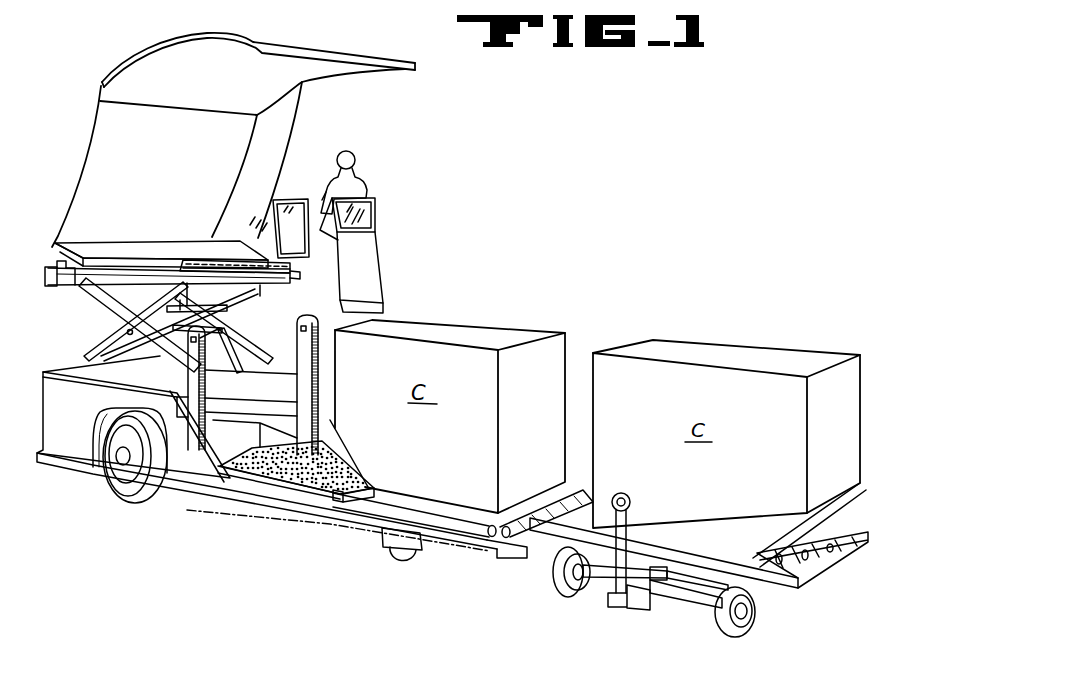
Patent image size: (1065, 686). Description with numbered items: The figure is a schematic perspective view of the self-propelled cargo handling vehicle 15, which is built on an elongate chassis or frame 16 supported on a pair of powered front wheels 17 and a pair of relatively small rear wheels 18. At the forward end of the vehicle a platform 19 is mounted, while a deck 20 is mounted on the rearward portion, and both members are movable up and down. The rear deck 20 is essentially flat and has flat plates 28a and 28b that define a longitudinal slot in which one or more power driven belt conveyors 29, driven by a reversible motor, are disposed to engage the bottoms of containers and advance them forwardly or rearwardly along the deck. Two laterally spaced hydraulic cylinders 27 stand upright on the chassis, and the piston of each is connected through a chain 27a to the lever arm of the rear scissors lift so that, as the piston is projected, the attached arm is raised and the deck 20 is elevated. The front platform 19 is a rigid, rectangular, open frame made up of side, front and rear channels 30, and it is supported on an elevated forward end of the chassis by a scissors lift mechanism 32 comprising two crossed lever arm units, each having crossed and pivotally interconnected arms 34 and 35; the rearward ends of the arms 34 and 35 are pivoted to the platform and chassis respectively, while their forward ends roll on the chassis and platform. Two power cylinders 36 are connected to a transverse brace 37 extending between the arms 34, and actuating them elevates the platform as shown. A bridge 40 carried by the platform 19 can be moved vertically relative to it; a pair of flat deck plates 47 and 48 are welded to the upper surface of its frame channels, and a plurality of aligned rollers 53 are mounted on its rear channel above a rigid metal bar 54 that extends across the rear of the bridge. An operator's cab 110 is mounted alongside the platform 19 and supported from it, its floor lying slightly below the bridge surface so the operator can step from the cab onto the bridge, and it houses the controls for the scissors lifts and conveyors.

The self-propelled cargo handling vehicle 15 is at (203, 511).
The chassis or frame 16 is at (241, 498).
The powered front wheels 17 is at (130, 497).
The rear wheels 18 is at (410, 553).
The platform 19 is at (74, 286).
The deck 20 is at (308, 498).
The hydraulic cylinders 27 is at (297, 391).
The chain 27a is at (312, 408).
The flat plate 28a is at (321, 449).
The flat plate 28b is at (353, 478).
The power driven belt conveyors 29 is at (331, 461).
The channels 30 is at (52, 276).
The scissors lift mechanism 32 is at (104, 328).
The arm 34 is at (104, 346).
The arm 35 is at (111, 317).
The power cylinders 36 is at (233, 329).
The transverse brace 37 is at (170, 309).
The bridge 40 is at (146, 231).
The flat deck plate 47 is at (192, 239).
The flat deck plate 48 is at (100, 242).
The aligned rollers 53 is at (237, 259).
The rigid metal bar 54 is at (294, 268).
The operator's cab 110 is at (366, 243).